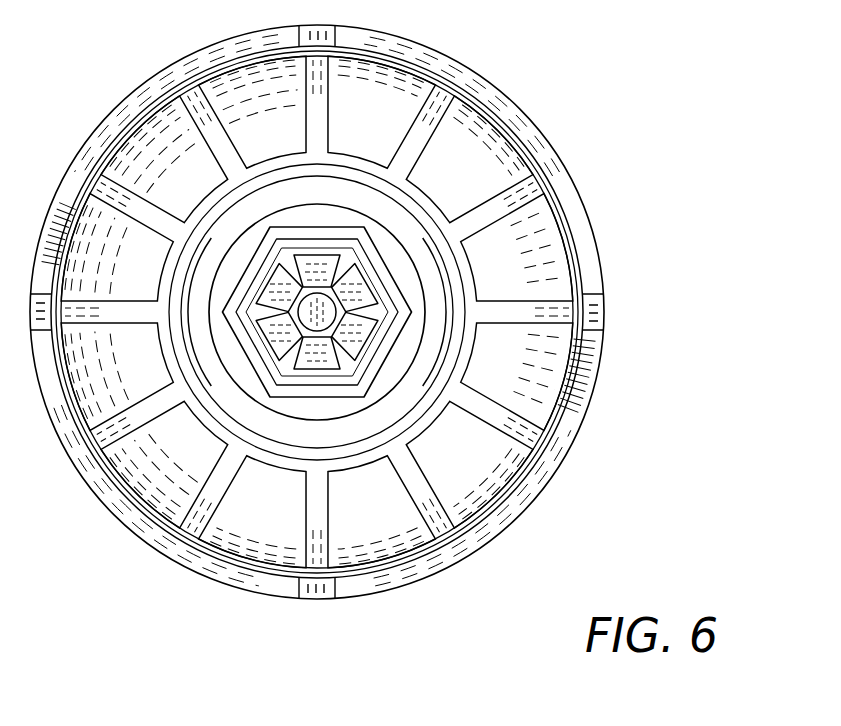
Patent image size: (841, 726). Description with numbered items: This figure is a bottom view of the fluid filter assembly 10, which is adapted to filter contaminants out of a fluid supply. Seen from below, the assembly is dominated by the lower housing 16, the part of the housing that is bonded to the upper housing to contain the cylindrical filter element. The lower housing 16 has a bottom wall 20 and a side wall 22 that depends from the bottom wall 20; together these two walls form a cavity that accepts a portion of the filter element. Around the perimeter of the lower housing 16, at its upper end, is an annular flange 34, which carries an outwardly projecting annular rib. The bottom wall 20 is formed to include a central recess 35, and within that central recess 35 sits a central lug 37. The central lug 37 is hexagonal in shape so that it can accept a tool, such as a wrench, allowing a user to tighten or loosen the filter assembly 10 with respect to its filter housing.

The fluid filter assembly 10 is at (620, 188).
The lower housing 16 is at (555, 480).
The bottom wall 20 is at (493, 363).
The side wall 22 is at (590, 281).
The annular flange 34 is at (450, 557).
The central recess 35 is at (438, 316).
The central lug 37 is at (372, 273).